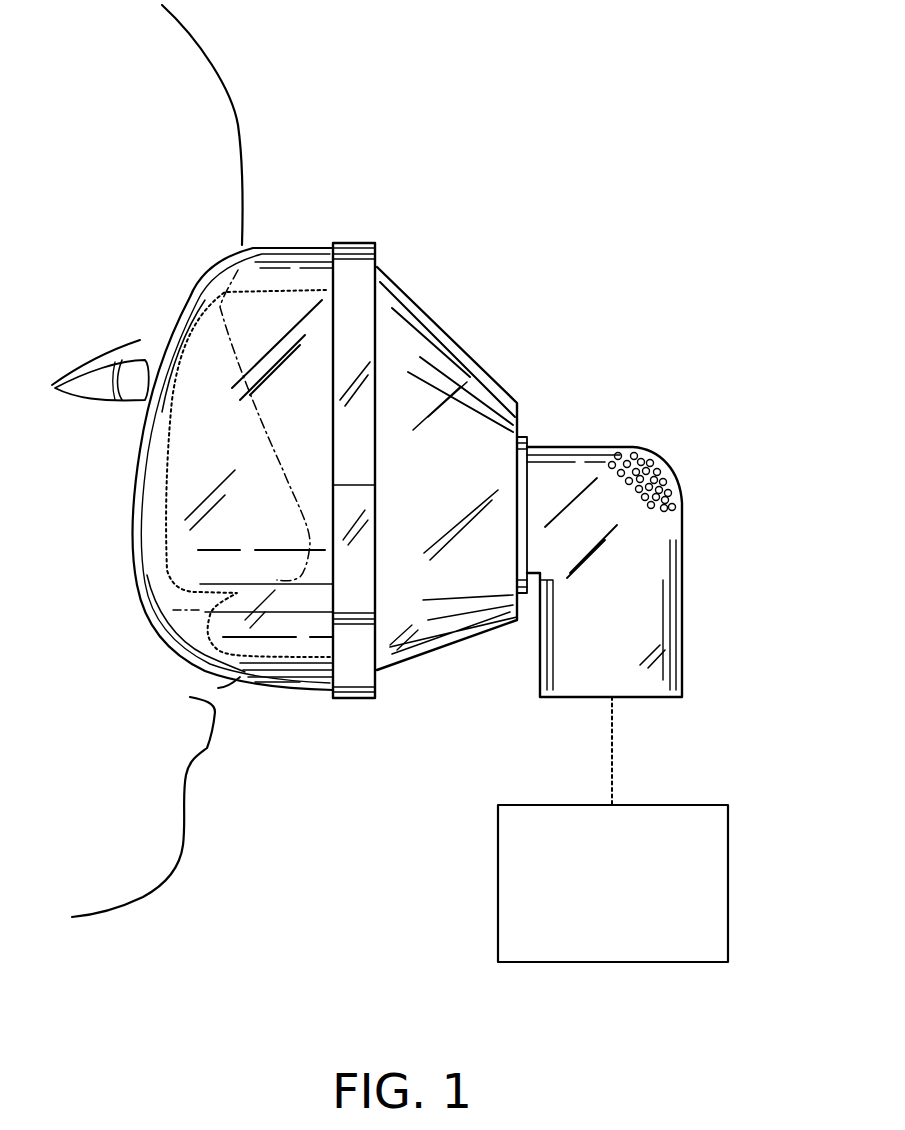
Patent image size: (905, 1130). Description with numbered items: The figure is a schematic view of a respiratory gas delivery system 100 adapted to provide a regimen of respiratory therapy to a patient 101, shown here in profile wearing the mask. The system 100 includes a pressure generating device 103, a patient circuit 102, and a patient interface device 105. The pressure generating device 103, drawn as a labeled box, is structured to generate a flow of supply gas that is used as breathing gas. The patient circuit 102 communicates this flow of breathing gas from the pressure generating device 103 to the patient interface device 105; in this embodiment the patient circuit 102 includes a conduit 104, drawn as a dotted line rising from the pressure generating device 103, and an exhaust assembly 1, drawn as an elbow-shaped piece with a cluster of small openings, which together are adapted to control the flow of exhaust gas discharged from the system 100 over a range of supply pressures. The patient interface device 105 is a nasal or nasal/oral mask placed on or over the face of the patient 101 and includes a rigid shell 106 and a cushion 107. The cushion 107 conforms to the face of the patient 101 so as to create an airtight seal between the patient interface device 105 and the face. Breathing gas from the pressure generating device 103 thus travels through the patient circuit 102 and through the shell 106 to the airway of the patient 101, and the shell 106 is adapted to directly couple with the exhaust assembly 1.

The exhaust assembly 1 is at (683, 536).
The respiratory gas delivery system 100 is at (638, 187).
The patient 101 is at (232, 108).
The patient circuit 102 is at (676, 572).
The pressure generating device 103 is at (728, 875).
The conduit 104 is at (613, 748).
The patient interface device 105 is at (361, 504).
The rigid shell 106 is at (430, 653).
The cushion 107 is at (284, 656).